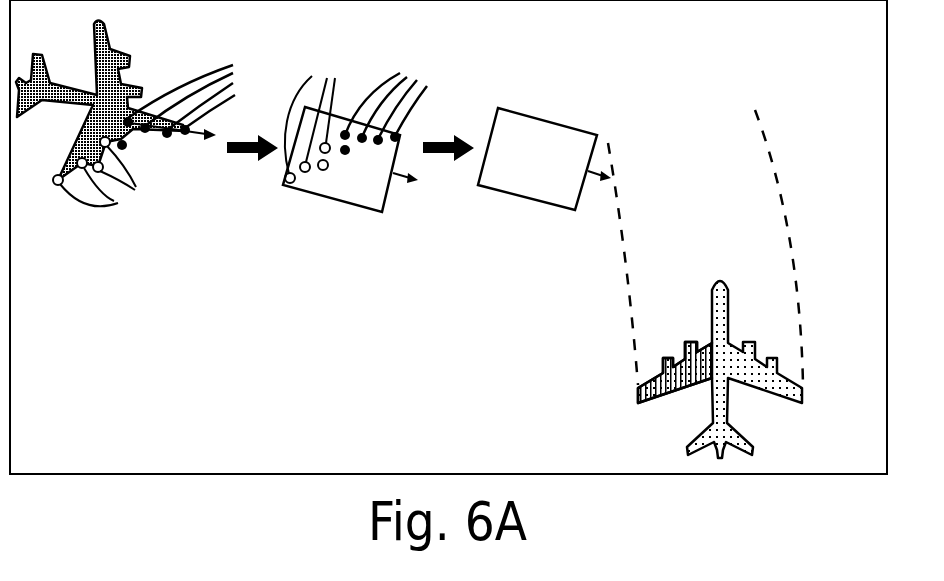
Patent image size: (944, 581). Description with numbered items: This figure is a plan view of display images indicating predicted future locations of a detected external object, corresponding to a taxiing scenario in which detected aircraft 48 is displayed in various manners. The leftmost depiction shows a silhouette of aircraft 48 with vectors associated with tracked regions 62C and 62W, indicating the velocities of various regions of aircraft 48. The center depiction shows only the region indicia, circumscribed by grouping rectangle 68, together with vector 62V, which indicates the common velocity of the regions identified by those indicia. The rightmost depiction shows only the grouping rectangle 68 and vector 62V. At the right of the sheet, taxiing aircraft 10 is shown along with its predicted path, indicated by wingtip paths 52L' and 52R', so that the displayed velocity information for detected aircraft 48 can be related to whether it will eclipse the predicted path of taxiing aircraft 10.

The detected aircraft 48 is at (113, 90).
The wing tracked regions 62W is at (287, 102).
The tracked regions 62C is at (205, 133).
The grouping rectangle 68 is at (343, 200).
The vector 62V is at (399, 186).
The left wingtip path 52L' is at (661, 264).
The right wingtip path 52R' is at (756, 247).
The taxiing aircraft 10 is at (720, 350).